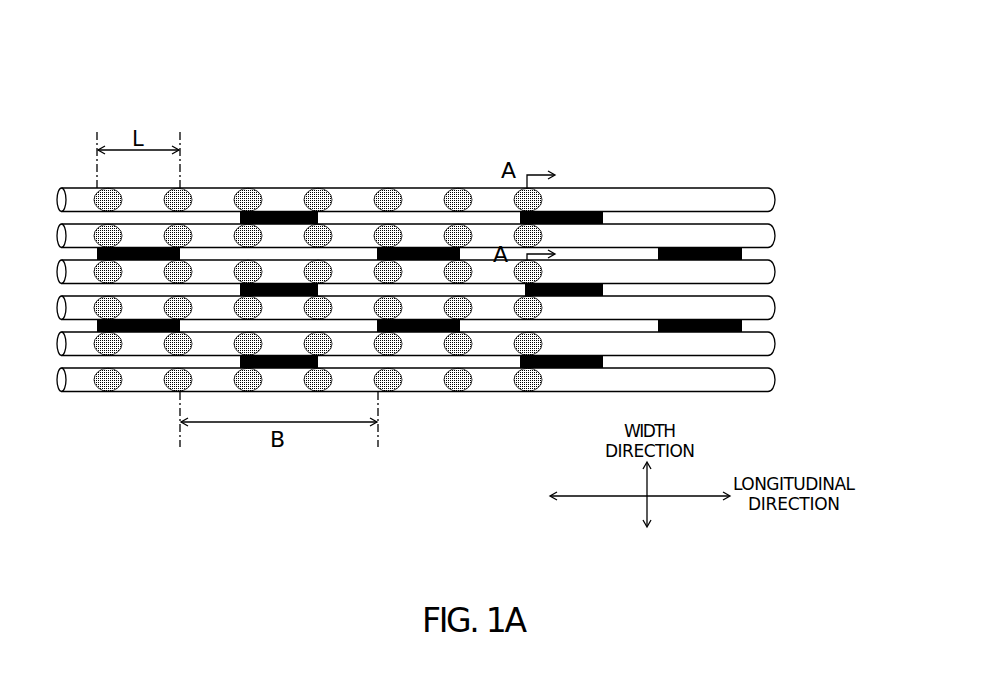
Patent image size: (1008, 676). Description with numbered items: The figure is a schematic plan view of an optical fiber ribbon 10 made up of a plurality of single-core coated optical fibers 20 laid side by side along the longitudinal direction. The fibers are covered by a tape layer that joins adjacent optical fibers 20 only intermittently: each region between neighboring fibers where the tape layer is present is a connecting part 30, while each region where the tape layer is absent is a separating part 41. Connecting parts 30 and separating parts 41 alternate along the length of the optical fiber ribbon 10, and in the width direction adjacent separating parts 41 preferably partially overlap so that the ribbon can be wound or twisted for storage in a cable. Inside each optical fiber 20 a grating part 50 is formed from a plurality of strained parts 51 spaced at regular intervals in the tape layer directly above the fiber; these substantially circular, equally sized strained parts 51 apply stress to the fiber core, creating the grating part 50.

The optical fiber ribbon 10 is at (462, 215).
The single-core coated optical fiber 20 is at (775, 200).
The connecting part 30 is at (290, 212).
The separating part 41 is at (427, 222).
The grating part 50 is at (318, 215).
The strained part 51 is at (245, 188).